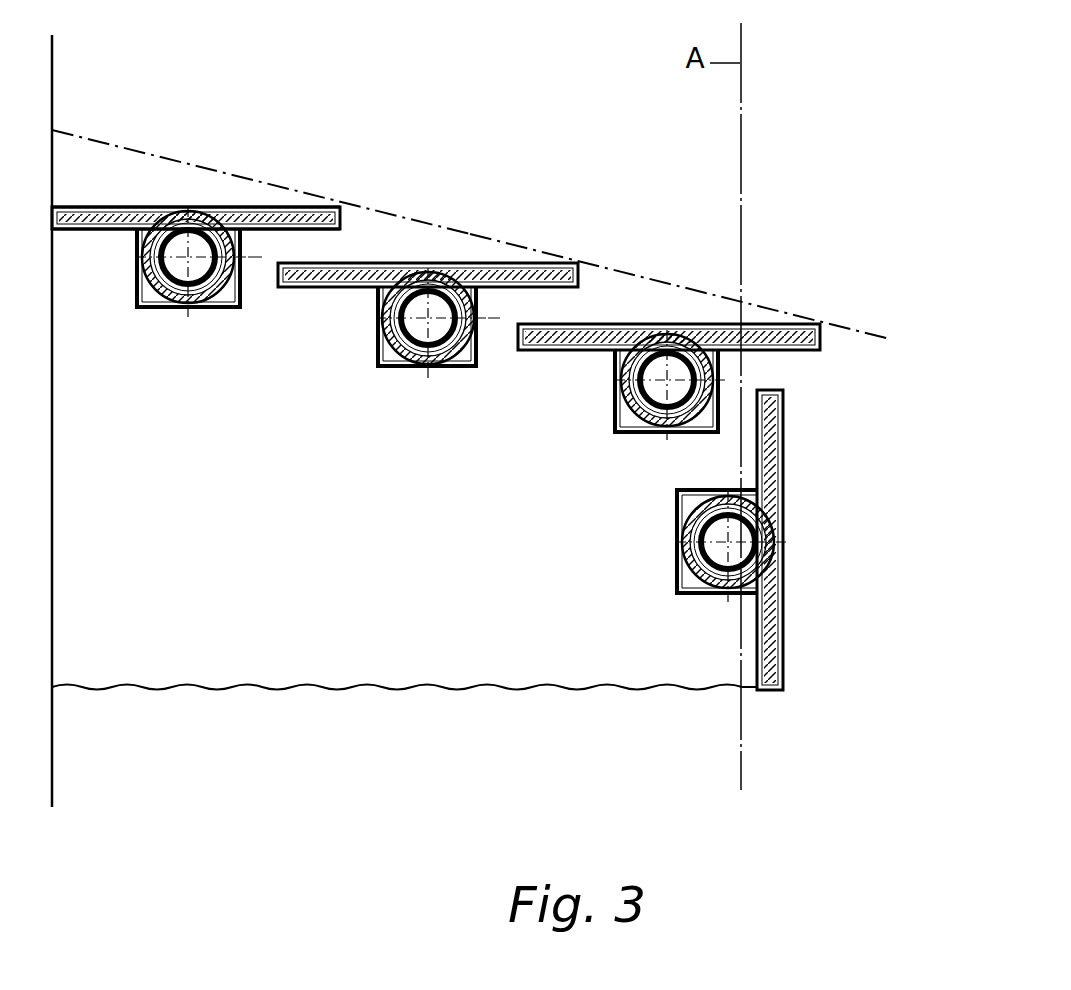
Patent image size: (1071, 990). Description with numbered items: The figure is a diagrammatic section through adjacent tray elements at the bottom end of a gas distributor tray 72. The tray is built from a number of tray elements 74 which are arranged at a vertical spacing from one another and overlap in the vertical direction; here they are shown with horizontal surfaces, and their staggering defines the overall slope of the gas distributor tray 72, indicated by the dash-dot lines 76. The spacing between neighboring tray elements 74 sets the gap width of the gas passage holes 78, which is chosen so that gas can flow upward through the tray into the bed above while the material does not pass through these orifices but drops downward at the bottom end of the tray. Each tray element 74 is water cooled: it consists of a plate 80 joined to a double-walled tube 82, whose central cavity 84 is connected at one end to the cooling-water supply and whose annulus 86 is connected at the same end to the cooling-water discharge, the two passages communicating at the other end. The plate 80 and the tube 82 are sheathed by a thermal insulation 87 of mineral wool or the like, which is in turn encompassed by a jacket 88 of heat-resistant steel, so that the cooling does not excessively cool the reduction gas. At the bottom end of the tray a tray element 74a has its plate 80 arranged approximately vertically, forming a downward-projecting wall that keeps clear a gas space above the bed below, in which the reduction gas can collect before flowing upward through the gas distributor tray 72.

The gas distributor tray 72 is at (410, 240).
The tray element 74 is at (176, 267).
The tray element 74a is at (630, 533).
The lines 76 is at (505, 240).
The gas passage holes 78 is at (255, 302).
The plate 80 is at (317, 210).
The double-walled tube 82 is at (140, 290).
The central cavity 84 is at (210, 303).
The annulus 86 is at (207, 212).
The thermal insulation 87 is at (87, 230).
The jacket 88 is at (133, 207).